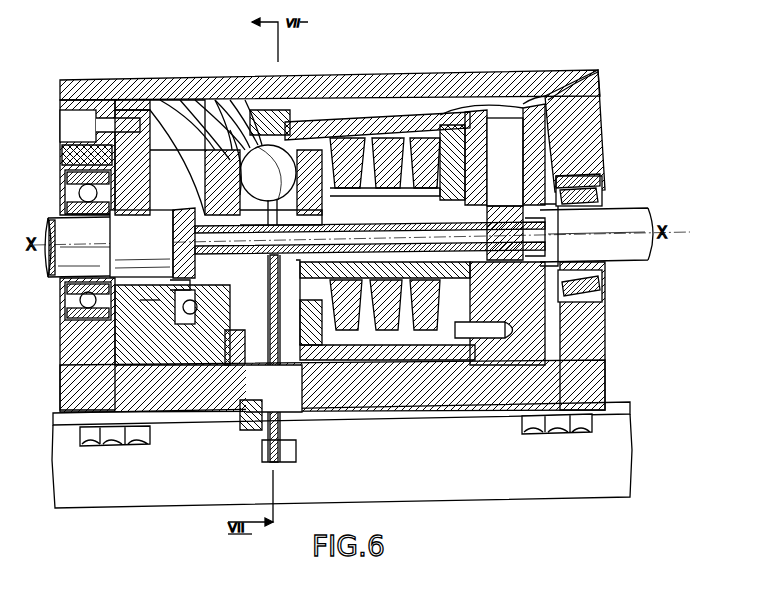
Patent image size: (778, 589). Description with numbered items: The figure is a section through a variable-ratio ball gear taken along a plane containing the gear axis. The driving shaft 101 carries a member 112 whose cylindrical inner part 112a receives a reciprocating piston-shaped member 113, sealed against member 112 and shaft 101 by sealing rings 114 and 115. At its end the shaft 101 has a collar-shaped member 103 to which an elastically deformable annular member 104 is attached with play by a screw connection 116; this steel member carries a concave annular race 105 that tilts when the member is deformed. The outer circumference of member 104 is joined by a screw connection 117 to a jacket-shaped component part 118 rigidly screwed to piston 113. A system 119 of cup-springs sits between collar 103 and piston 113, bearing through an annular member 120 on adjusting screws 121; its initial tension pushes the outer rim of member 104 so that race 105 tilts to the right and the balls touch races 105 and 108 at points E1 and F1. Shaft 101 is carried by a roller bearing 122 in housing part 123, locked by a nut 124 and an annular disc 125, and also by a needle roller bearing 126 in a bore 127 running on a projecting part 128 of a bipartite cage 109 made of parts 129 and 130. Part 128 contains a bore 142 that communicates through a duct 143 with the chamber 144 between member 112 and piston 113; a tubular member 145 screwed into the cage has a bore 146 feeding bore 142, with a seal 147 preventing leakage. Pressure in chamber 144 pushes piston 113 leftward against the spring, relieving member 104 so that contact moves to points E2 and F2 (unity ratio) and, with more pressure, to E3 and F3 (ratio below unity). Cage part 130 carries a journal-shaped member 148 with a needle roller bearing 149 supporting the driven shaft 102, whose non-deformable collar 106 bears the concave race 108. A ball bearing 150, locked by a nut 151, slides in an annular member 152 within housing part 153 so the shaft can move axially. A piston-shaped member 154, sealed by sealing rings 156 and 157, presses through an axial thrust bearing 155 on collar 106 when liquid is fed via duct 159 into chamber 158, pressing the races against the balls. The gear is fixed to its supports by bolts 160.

The driving shaft 101 is at (615, 245).
The driven shaft 102 is at (85, 258).
The collar-shaped member 103 is at (320, 140).
The elastically deformable annular member 104 is at (278, 152).
The annular race 105 is at (285, 120).
The non-deformable collar 106 is at (182, 125).
The race 108 is at (172, 220).
The bipartite cage 109 is at (245, 98).
The member 112 is at (533, 110).
The cylindrical inner part 112a is at (522, 60).
The piston-shaped member 113 is at (480, 115).
The sealing ring 114 is at (470, 112).
The sealing ring 115 is at (512, 118).
The screw connection 116 is at (350, 140).
The screw connection 117 is at (260, 100).
The jacket-shaped component part 118 is at (392, 140).
The system of cup-springs 119 is at (428, 140).
The annular member 120 is at (452, 125).
The adjusting screws 121 is at (487, 330).
The roller bearing 122 is at (580, 165).
The housing part 123 is at (585, 100).
The nut 124 is at (598, 190).
The annular disc 125 is at (598, 135).
The needle roller bearing 126 is at (355, 360).
The bore 127 is at (328, 362).
The projecting part 128 is at (422, 360).
The cage part 129 is at (298, 400).
The cage part 130 is at (258, 432).
The bore 142 is at (482, 365).
The duct 143 is at (510, 205).
The chamber 144 is at (585, 75).
The tubular member 145 is at (262, 400).
The bore 146 is at (266, 462).
The seal 147 is at (228, 365).
The journal-shaped member 148 is at (240, 330).
The needle roller bearing 149 is at (210, 345).
The ball bearing 150 is at (83, 313).
The nut 151 is at (60, 200).
The annular member 152 is at (75, 163).
The housing part 153 is at (120, 120).
The piston-shaped member 154 is at (165, 333).
The axial thrust bearing 155 is at (170, 325).
The sealing ring 156 is at (80, 125).
The sealing ring 157 is at (160, 390).
The chamber 158 is at (128, 115).
The duct 159 is at (95, 89).
The bolts 160 is at (110, 430).
The contact point on race 108 F3 is at (165, 100).
The contact point on race 108 F2 is at (185, 100).
The contact point on race 108 F1 is at (200, 100).
The contact point on race 105 E1 is at (218, 100).
The contact point on race 105 E2 is at (232, 100).
The contact point on race 105 E3 is at (248, 100).